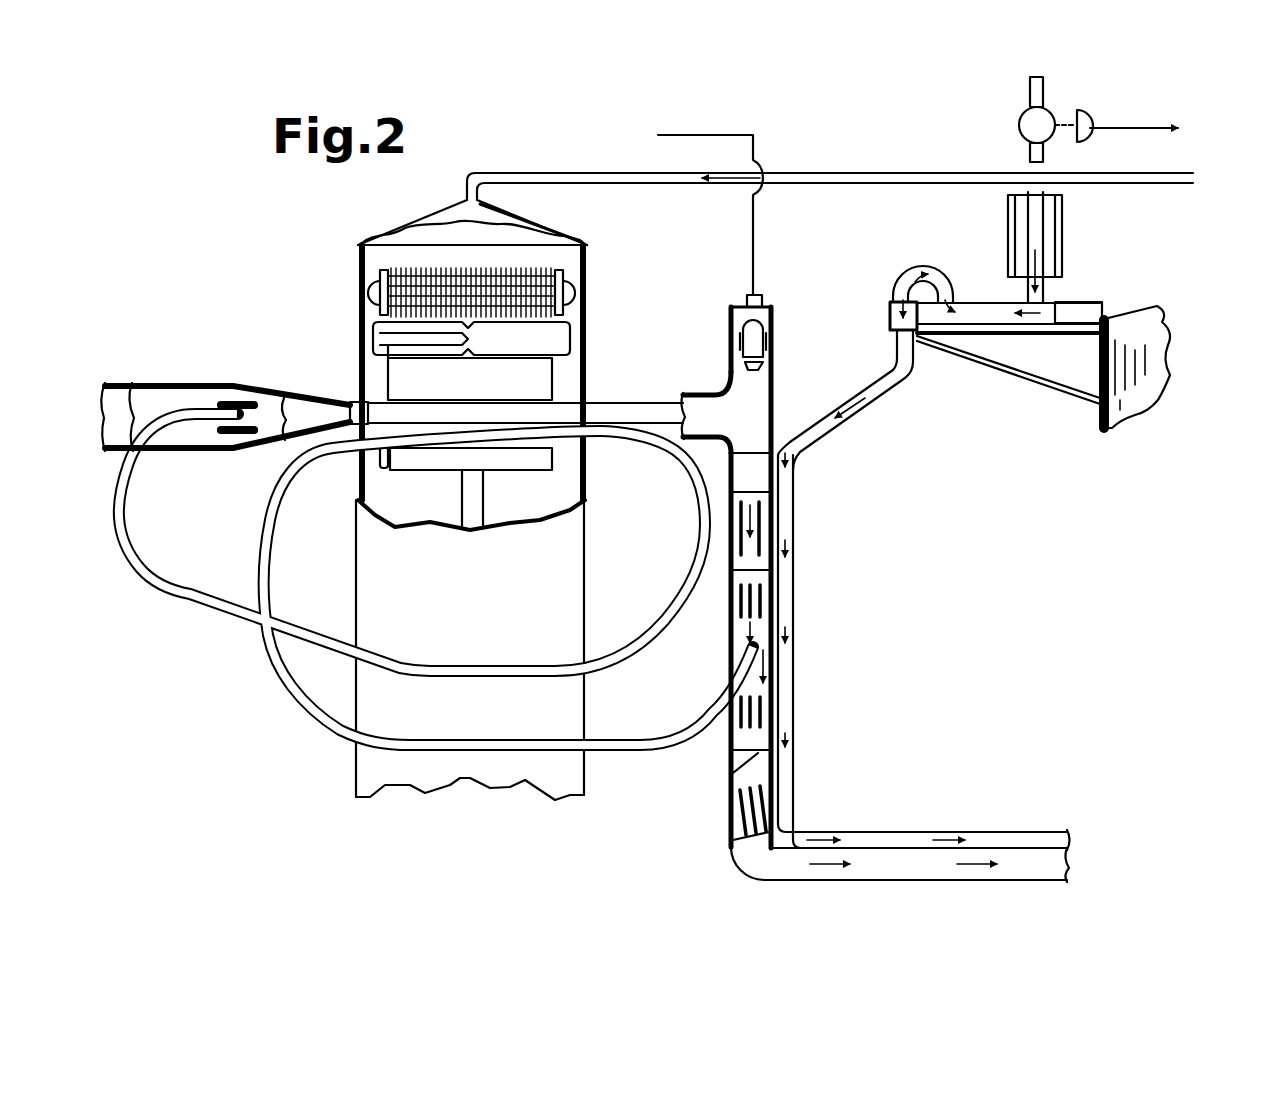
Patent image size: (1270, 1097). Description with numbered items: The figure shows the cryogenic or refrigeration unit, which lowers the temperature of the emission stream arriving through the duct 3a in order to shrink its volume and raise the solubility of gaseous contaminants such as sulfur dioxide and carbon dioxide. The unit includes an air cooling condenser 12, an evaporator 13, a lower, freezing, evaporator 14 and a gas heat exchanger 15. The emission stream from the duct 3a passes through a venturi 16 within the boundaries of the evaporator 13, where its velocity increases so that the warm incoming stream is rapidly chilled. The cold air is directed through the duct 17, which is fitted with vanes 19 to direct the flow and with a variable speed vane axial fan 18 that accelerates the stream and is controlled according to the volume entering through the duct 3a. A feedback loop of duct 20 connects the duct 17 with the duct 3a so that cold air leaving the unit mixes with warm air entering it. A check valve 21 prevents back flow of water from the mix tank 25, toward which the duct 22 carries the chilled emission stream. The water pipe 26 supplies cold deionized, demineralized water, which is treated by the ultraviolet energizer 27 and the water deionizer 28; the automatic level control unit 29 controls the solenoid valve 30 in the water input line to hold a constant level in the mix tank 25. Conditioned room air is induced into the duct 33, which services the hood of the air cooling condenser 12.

The duct 3a is at (128, 398).
The air cooling condenser 12 is at (368, 285).
The evaporator 13 is at (375, 331).
The lower, freezing, evaporator 14 is at (552, 372).
The gas heat exchanger 15 is at (428, 472).
The venturi 16 is at (352, 403).
The duct 17 is at (704, 396).
The vane axial fan 18 is at (740, 325).
The vanes 19 is at (731, 600).
The feedback loop of duct 20 is at (645, 740).
The check valve 21 is at (738, 760).
The duct 22 is at (920, 874).
The mix tank 25 is at (1160, 352).
The water pipe 26 is at (913, 832).
The ultraviolet energizer 27 is at (905, 265).
The water deionizer 28 is at (1007, 212).
The automatic level control unit 29 is at (1145, 99).
The solenoid valve 30 is at (1020, 120).
The duct 33 is at (930, 172).